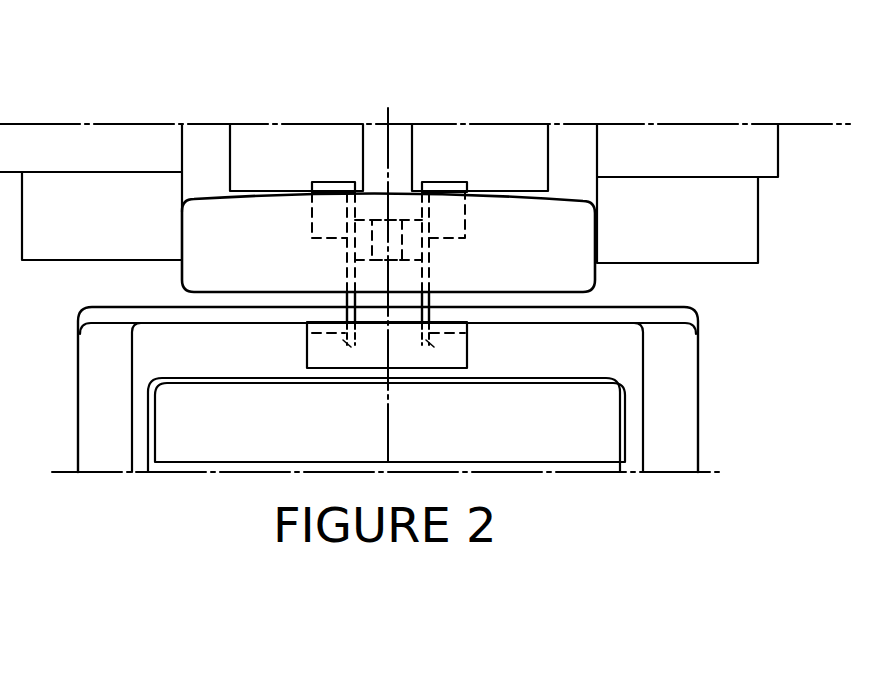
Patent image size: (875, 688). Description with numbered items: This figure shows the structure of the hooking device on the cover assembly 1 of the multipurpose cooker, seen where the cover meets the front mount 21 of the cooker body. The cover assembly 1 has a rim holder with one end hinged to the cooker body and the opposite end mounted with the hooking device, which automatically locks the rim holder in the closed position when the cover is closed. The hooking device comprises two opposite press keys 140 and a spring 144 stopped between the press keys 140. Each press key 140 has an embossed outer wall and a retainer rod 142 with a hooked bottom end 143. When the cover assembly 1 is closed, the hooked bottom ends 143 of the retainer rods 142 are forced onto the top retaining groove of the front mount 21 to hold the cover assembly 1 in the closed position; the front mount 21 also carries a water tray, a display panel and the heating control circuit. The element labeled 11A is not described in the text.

The cover assembly 1 is at (583, 142).
The press keys 140 is at (312, 223).
The spring 144 is at (415, 243).
The retainer rod 142 is at (423, 310).
The hooked bottom end 143 is at (423, 342).
The front mount 21 is at (623, 372).
The inner frame element 11A is at (312, 409).